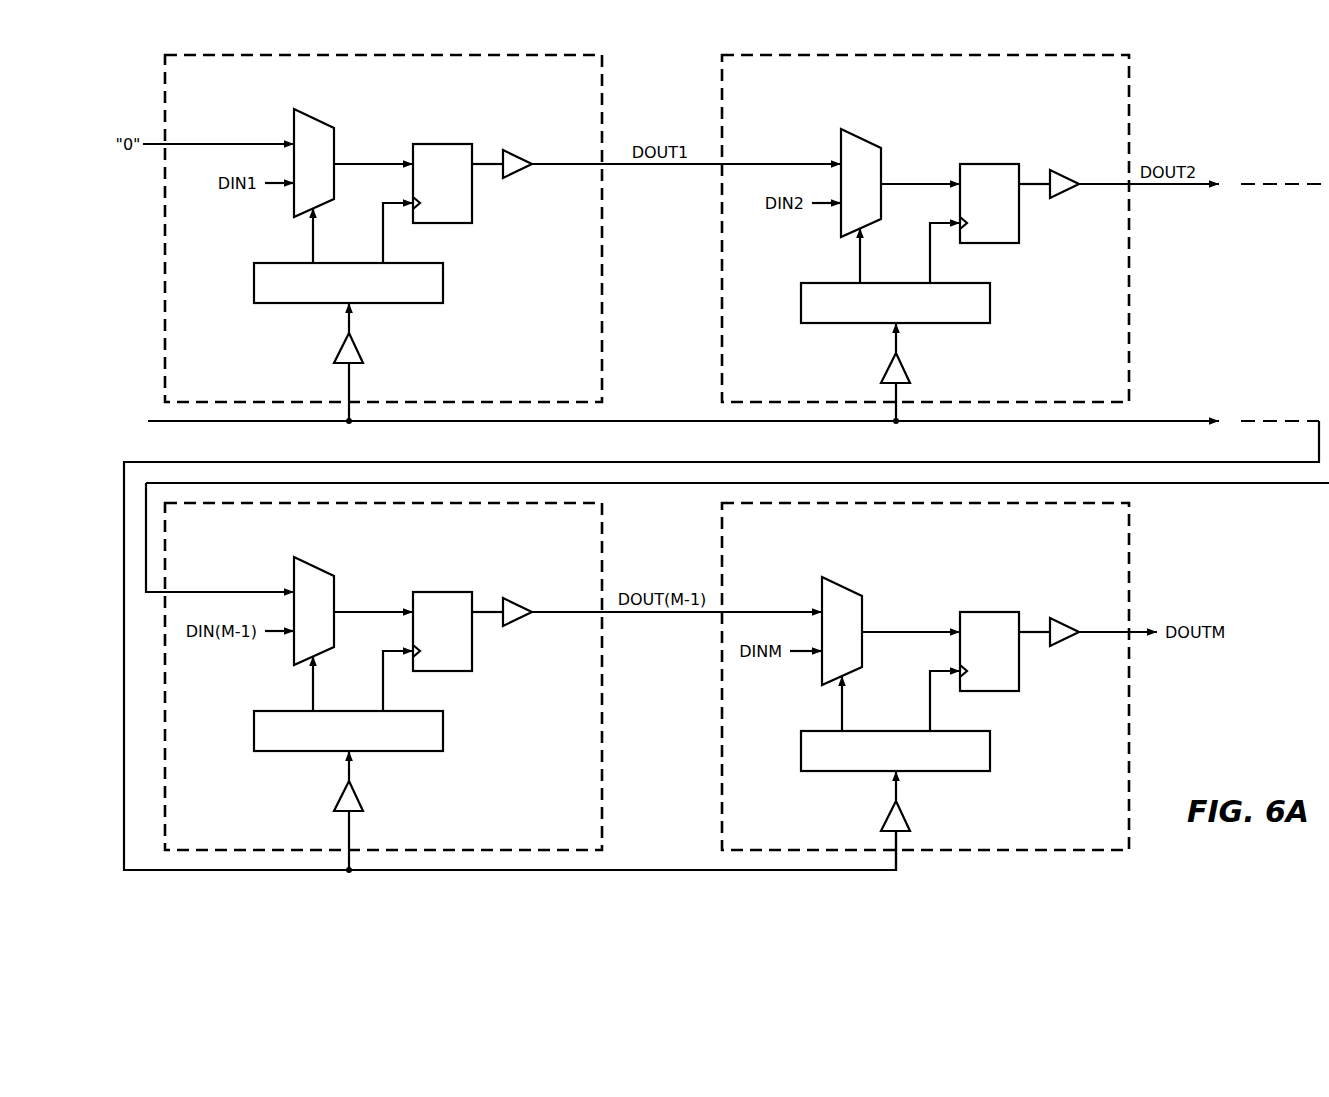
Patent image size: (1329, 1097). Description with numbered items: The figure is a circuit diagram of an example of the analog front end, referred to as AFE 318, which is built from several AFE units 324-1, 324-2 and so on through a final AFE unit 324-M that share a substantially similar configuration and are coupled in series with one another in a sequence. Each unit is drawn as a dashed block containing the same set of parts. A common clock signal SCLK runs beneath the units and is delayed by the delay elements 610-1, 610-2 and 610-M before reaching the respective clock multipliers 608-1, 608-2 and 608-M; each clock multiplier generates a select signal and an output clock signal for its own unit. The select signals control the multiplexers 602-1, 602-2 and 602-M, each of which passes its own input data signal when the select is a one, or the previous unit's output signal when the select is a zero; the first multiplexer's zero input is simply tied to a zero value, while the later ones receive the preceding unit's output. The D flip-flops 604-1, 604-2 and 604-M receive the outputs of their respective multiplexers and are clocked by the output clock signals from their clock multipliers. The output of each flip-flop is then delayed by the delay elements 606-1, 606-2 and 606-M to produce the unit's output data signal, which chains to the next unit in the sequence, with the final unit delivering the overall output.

The analog front end (AFE) 318 is at (1284, 104).
The AFE unit 324-1 is at (519, 380).
The AFE unit 324-2 is at (1046, 380).
The AFE unit 324-M is at (1042, 828).
The multiplexer 602-1 is at (317, 120).
The multiplexer 602-2 is at (864, 140).
The multiplexer 602-M is at (845, 588).
The D flip-flop 604-1 is at (443, 144).
The D flip-flop 604-2 is at (990, 164).
The D flip-flop 604-M is at (990, 612).
The delay element 606-1 is at (518, 157).
The delay element 606-2 is at (1065, 177).
The delay element 606-M is at (1065, 625).
The clock multiplier 608-1 is at (443, 285).
The clock multiplier 608-2 is at (990, 305).
The clock multiplier 608-M is at (990, 753).
The delay element 610-1 is at (340, 352).
The delay element 610-2 is at (887, 372).
The delay element 610-M is at (882, 820).